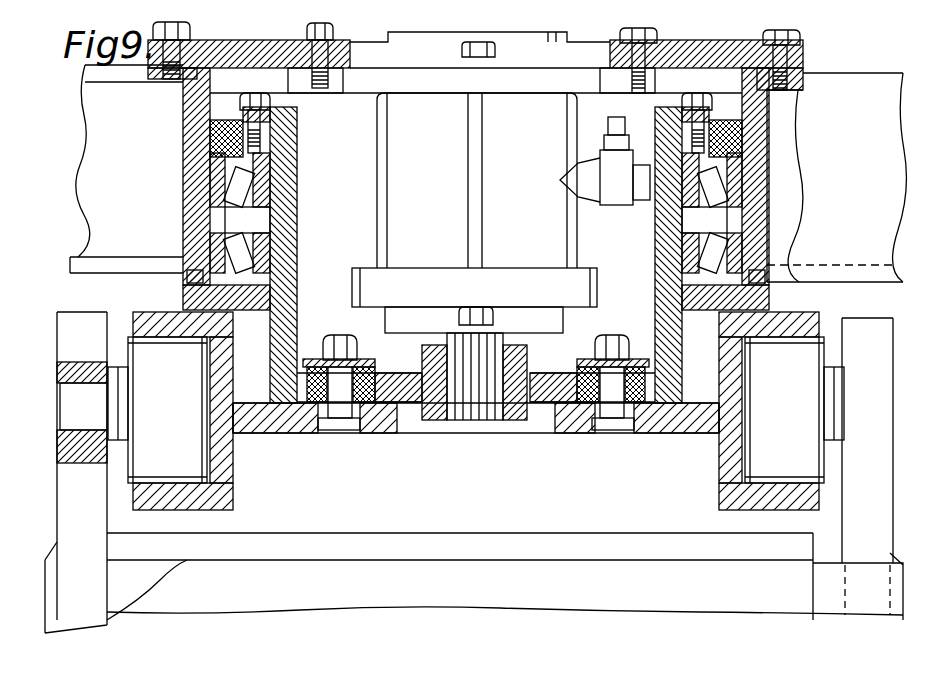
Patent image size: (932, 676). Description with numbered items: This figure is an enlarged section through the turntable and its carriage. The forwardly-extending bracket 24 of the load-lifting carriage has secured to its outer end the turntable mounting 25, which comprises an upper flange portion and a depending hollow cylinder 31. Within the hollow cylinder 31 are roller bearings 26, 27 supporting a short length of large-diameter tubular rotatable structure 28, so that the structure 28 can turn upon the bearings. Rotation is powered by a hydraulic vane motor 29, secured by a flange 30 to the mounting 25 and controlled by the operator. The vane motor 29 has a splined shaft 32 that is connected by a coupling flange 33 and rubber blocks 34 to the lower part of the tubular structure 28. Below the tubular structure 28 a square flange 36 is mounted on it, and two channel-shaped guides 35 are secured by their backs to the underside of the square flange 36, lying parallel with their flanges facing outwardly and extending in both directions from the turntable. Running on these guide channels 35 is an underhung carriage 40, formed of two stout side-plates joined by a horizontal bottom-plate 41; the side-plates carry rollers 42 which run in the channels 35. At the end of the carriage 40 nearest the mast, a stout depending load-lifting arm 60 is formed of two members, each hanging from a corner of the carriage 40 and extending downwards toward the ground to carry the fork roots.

The forwardly-extending bracket 24 is at (93, 258).
The turntable mounting 25 is at (475, 60).
The roller bearing 26 is at (213, 240).
The roller bearing 27 is at (213, 184).
The tubular rotatable structure 28 is at (284, 162).
The hydraulic vane motor 29 is at (388, 233).
The flange 30 is at (513, 83).
The depending hollow cylinder 31 is at (185, 138).
The splined shaft 32 is at (477, 410).
The coupling flange 33 is at (389, 407).
The rubber blocks 34 is at (320, 418).
The channel-shaped guides 35 is at (223, 490).
The square flange 36 is at (197, 295).
The underhung carriage 40 is at (90, 502).
The horizontal bottom-plate 41 is at (508, 547).
The rollers 42 is at (178, 360).
The depending arm 60 is at (47, 587).